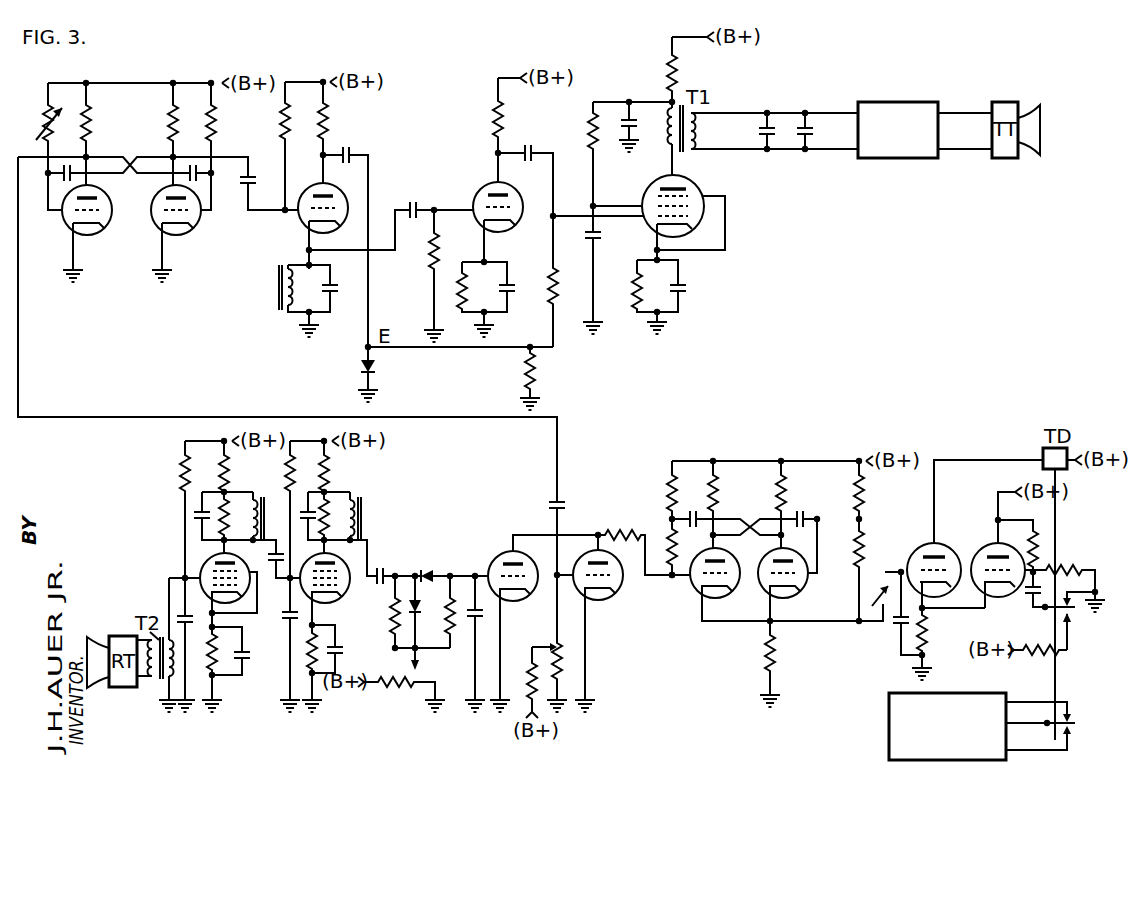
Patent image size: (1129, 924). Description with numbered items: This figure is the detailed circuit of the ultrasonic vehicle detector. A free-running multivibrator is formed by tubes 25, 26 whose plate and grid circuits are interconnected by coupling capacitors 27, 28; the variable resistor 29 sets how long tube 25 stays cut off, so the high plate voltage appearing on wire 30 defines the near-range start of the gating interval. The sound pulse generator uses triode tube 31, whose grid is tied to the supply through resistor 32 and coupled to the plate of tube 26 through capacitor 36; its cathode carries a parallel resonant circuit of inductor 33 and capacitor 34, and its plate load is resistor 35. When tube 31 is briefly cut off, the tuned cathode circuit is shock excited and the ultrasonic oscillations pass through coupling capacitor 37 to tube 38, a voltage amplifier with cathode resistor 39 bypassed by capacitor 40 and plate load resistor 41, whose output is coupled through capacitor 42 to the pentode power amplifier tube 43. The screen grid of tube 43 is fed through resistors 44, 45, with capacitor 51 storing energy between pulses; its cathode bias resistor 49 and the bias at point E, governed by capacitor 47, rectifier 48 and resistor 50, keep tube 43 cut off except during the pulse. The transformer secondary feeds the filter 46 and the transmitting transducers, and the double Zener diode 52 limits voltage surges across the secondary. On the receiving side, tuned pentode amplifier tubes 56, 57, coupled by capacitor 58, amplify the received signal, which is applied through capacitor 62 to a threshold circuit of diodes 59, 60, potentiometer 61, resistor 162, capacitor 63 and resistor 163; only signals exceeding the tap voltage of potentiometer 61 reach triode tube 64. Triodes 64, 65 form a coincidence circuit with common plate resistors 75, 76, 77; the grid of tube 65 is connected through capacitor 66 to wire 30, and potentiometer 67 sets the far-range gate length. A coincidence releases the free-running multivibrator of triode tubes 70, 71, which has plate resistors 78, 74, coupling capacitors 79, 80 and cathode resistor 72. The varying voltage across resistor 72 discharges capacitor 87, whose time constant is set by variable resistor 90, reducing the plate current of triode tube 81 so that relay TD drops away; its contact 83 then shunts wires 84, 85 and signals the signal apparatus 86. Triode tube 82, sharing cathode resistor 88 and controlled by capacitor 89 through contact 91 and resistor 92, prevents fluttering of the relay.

The tube 25 is at (98, 220).
The tube 26 is at (186, 220).
The coupling capacitor 27 is at (63, 167).
The coupling capacitor 28 is at (200, 180).
The variable resistor 29 is at (39, 118).
The wire 30 is at (138, 417).
The triode tube 31 is at (335, 230).
The resistor 32 is at (284, 116).
The inductor 33 is at (278, 292).
The capacitor 34 is at (333, 294).
The plate load resistor 35 is at (339, 120).
The capacitor 36 is at (252, 180).
The coupling capacitor 37 is at (416, 194).
The tube 38 is at (508, 218).
The cathode resistor 39 is at (476, 290).
The capacitor 40 is at (513, 286).
The plate load resistor 41 is at (514, 118).
The capacitor 42 is at (530, 148).
The pentode power amplifier tube 43 is at (690, 228).
The resistor 44 is at (581, 130).
The resistor 45 is at (686, 72).
The filter 46 is at (904, 103).
The capacitor 47 is at (353, 154).
The rectifier 48 is at (361, 374).
The cathode bias resistor 49 is at (634, 287).
The resistor 50 is at (527, 373).
The capacitor 51 is at (642, 118).
The double Zener diode 52 is at (762, 131).
The tube 56 is at (205, 565).
The tube 57 is at (345, 590).
The capacitor 58 is at (275, 568).
The diode 59 is at (427, 570).
The diode 60 is at (427, 621).
The potentiometer 61 is at (400, 690).
The capacitor 62 is at (379, 569).
The capacitor 63 is at (473, 625).
The triode tube 64 is at (496, 568).
The triode 65 is at (612, 596).
The capacitor 66 is at (562, 507).
The potentiometer 67 is at (552, 640).
The triode tube 70 is at (733, 595).
The triode tube 71 is at (802, 596).
The cathode resistor 72 is at (774, 650).
The resistor 74 is at (784, 490).
The resistor 75 is at (618, 524).
The resistor 76 is at (668, 534).
The resistor 77 is at (668, 496).
The plate resistor 78 is at (716, 495).
The capacitor 79 is at (692, 508).
The capacitor 80 is at (804, 514).
The triode tube 81 is at (918, 552).
The triode tube 82 is at (986, 552).
The relay contact 83 is at (1075, 725).
The wire 84 is at (1026, 715).
The wire 85 is at (1036, 765).
The signal apparatus 86 is at (965, 691).
The capacitor 87 is at (892, 631).
The cathode resistor 88 is at (935, 625).
The capacitor 89 is at (1028, 600).
The variable resistor 90 is at (876, 584).
The relay contact 91 is at (1056, 601).
The resistor 92 is at (1040, 666).
The resistor 162 is at (452, 588).
The resistor 163 is at (392, 618).